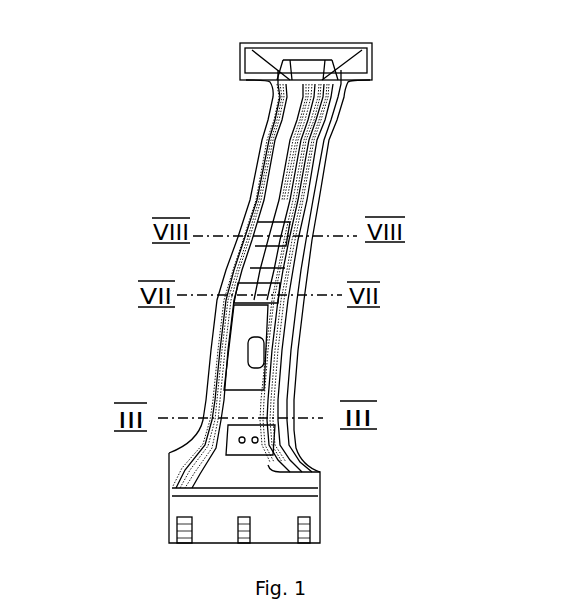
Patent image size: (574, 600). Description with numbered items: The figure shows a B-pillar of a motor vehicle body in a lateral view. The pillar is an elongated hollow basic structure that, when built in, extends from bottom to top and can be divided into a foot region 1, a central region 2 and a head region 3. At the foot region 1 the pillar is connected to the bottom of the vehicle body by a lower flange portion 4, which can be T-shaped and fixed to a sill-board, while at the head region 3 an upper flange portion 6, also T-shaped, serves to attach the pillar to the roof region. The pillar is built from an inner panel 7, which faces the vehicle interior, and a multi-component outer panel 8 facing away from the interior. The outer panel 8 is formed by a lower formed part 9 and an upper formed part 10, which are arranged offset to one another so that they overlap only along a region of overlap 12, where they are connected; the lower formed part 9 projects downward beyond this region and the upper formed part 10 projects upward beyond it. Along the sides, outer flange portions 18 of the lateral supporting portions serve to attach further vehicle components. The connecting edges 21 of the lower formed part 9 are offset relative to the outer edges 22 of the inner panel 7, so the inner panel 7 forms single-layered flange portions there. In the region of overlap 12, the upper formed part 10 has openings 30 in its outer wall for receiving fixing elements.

The foot region 1 is at (166, 482).
The central region 2 is at (255, 284).
The head region 3 is at (264, 133).
The lower flange portion 4 is at (318, 508).
The upper flange portion 6 is at (367, 54).
The inner panel 7 is at (330, 148).
The multi-component outer panel 8 is at (298, 200).
The lower formed part 9 is at (317, 472).
The upper formed part 10 is at (312, 128).
The region of overlap 12 is at (290, 357).
The outer flange portions 18 is at (247, 219).
The connecting edges 21 is at (213, 364).
The outer edges 22 is at (210, 388).
The openings 30 is at (257, 293).